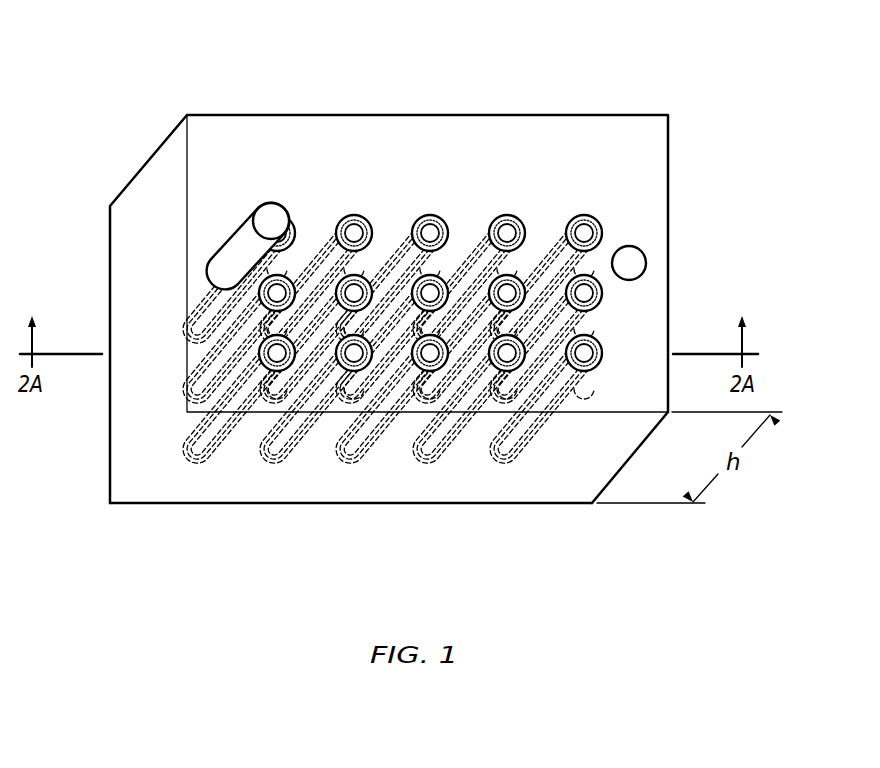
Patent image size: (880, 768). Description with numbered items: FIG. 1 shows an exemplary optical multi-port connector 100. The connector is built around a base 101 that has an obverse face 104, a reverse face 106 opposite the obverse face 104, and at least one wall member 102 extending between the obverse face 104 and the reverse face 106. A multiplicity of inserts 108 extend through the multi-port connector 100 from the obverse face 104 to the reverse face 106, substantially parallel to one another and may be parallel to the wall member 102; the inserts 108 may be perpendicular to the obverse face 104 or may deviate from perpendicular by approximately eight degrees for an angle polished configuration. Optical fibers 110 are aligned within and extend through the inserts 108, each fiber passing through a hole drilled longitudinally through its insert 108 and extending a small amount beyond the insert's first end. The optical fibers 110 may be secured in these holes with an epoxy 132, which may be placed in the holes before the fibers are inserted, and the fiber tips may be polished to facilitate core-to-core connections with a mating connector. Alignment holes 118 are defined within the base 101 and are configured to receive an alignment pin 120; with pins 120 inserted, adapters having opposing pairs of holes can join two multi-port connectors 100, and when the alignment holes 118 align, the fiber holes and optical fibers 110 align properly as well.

The optical multi-port connector 100 is at (430, 52).
The base 101 is at (577, 135).
The wall member 102 is at (275, 115).
The obverse face 104 is at (406, 314).
The reverse face 106 is at (172, 503).
The inserts 108 is at (572, 370).
The optical fibers 110 is at (522, 220).
The alignment holes 118 is at (650, 262).
The alignment pin 120 is at (238, 248).
The epoxy 132 is at (297, 228).